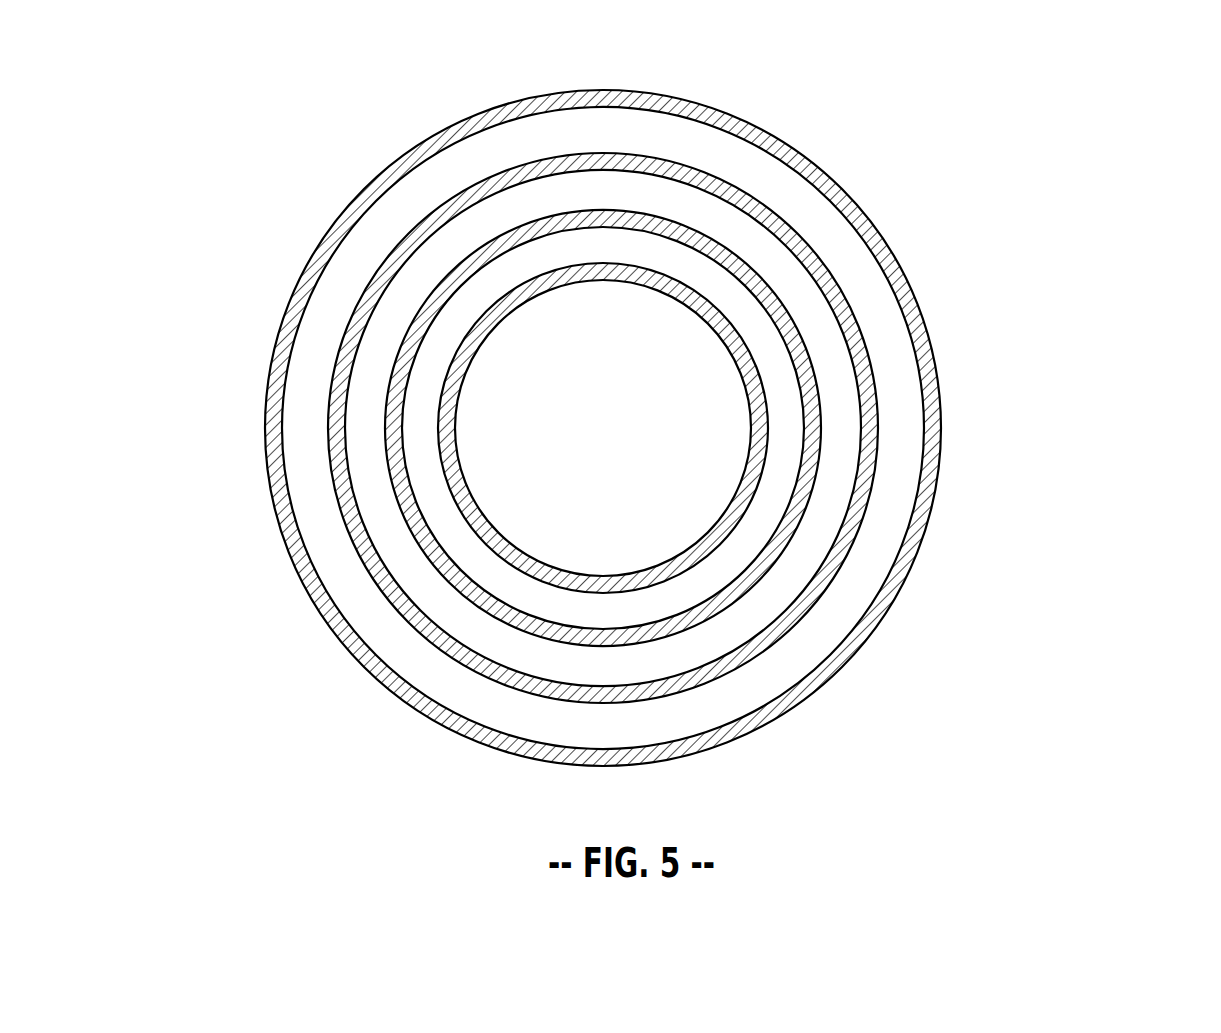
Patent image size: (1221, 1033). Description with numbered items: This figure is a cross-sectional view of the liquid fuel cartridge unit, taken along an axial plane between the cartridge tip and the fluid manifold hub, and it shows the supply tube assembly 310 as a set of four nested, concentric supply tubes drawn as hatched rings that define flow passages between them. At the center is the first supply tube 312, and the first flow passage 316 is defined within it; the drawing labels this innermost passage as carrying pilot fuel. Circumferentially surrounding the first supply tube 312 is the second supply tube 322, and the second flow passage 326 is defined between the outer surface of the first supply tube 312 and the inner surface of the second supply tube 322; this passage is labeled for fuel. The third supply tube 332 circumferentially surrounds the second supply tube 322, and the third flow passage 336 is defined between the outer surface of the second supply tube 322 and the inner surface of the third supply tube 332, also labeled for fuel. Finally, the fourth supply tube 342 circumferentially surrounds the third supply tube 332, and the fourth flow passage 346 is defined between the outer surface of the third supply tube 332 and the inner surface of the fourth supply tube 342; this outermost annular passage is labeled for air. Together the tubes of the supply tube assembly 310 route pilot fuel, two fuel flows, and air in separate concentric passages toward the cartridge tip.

The supply tube assembly 310 is at (701, 390).
The first supply tube 312 is at (698, 543).
The first flow passage 316 is at (627, 440).
The second supply tube 322 is at (818, 466).
The second flow passage 326 is at (627, 256).
The third supply tube 332 is at (378, 272).
The third flow passage 336 is at (627, 200).
The fourth supply tube 342 is at (362, 192).
The fourth flow passage 346 is at (627, 144).